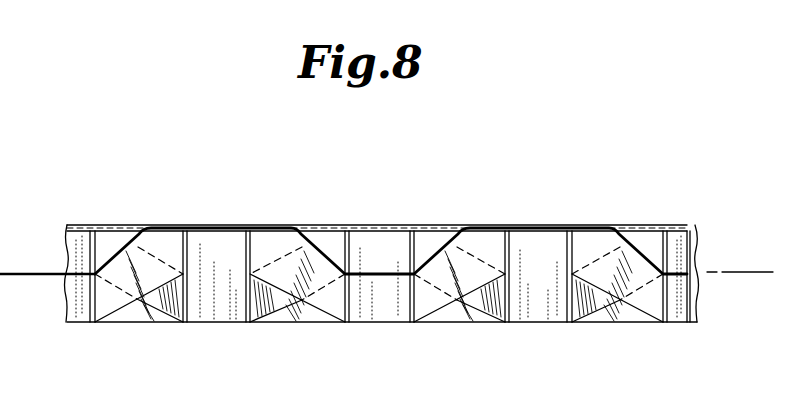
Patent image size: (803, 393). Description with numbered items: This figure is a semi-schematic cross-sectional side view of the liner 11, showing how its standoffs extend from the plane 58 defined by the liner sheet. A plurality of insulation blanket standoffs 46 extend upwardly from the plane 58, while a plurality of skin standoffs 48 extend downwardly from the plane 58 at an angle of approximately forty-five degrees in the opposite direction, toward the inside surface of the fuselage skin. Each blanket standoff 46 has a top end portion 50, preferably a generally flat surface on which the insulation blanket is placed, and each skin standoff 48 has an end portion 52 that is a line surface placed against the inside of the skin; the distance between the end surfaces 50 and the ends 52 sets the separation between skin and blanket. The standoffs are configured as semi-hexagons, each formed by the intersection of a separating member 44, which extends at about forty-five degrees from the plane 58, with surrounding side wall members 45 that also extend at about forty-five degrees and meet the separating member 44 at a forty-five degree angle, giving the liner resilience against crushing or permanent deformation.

The liner 11 is at (386, 258).
The separating member 44 is at (242, 261).
The side wall member 45 is at (147, 232).
The insulation blanket standoff 46 is at (270, 224).
The skin standoff 48 is at (231, 326).
The top end portion 50 is at (230, 228).
The end portion 52 is at (199, 323).
The plane of the sheet 58 is at (740, 270).